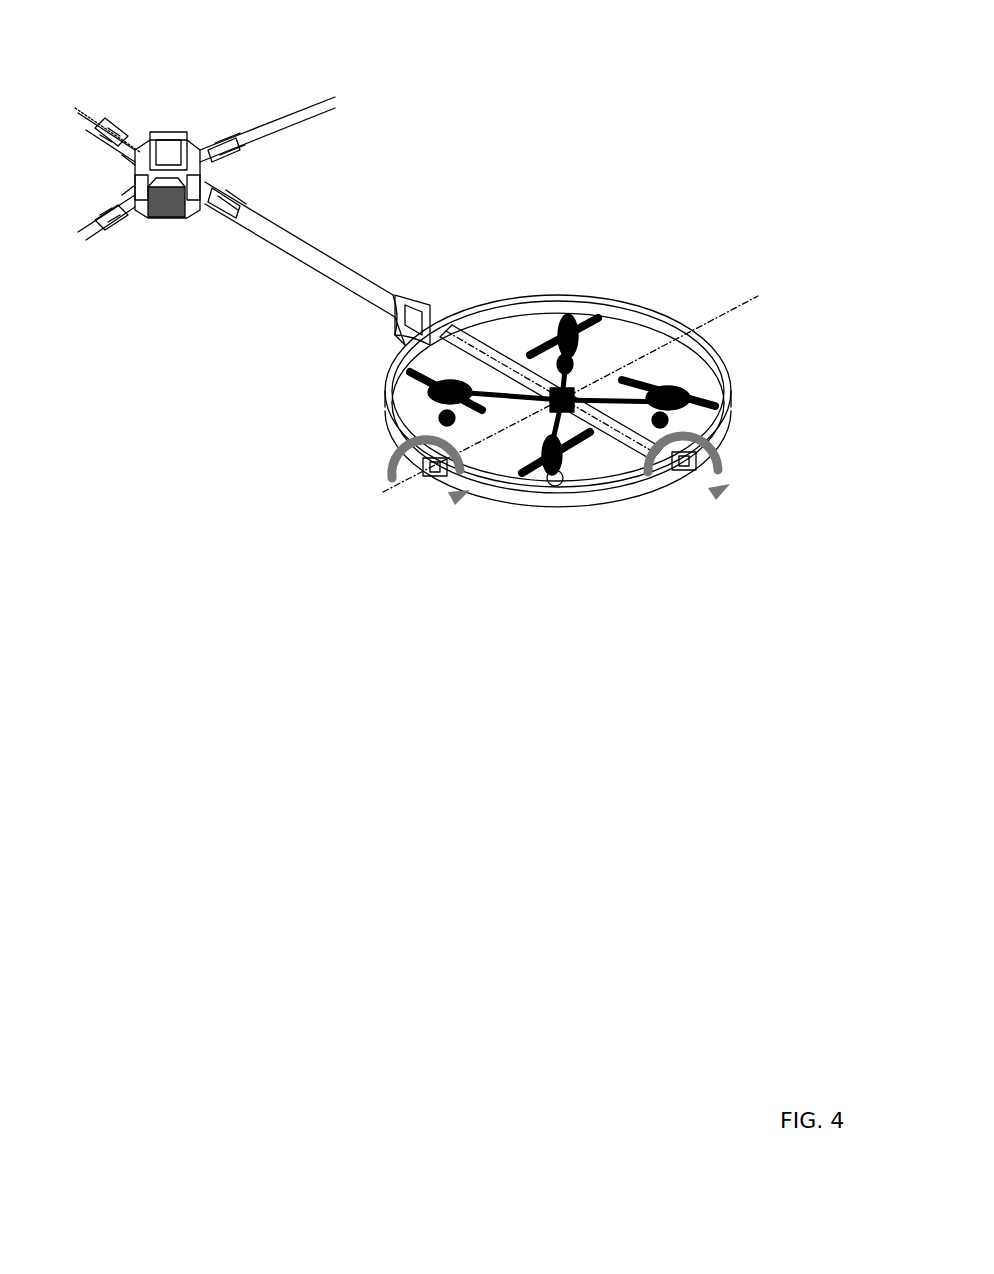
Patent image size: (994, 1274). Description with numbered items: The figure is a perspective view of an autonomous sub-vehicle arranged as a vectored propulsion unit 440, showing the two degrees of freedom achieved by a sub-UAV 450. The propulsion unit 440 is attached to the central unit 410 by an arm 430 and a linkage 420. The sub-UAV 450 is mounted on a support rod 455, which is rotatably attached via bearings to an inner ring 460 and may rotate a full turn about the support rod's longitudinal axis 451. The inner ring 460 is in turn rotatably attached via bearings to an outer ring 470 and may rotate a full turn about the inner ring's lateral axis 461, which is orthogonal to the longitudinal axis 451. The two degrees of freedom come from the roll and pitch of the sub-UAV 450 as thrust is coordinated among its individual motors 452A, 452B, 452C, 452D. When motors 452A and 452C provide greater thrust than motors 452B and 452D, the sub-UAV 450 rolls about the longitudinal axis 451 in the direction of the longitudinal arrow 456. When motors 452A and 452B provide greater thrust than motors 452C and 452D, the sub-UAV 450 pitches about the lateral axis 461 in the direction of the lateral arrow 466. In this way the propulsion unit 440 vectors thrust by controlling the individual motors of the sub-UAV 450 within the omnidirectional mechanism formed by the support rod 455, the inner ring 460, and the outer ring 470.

The central unit 410 is at (163, 92).
The linkage 420 is at (199, 232).
The arm 430 is at (273, 230).
The vectored propulsion unit 440 is at (651, 150).
The sub-UAV 450 is at (598, 356).
The individual motor 452A is at (420, 378).
The individual motor 452B is at (545, 300).
The individual motor 452C is at (540, 470).
The individual motor 452D is at (700, 400).
The support rod 455 is at (628, 450).
The longitudinal arrow 456 is at (724, 470).
The inner ring 460 is at (705, 352).
The lateral axis 461 is at (383, 505).
The longitudinal axis 451 is at (713, 506).
The lateral arrow 466 is at (456, 506).
The outer ring 470 is at (386, 433).